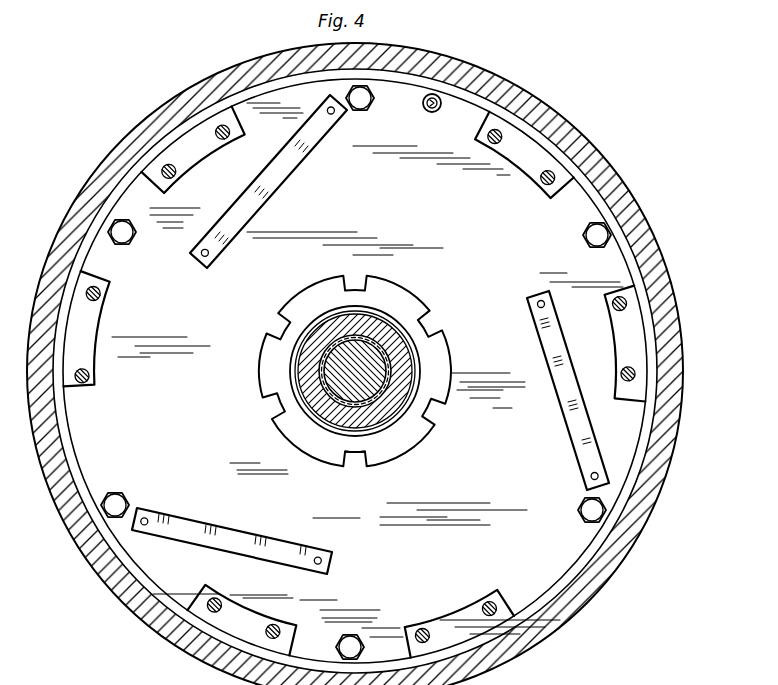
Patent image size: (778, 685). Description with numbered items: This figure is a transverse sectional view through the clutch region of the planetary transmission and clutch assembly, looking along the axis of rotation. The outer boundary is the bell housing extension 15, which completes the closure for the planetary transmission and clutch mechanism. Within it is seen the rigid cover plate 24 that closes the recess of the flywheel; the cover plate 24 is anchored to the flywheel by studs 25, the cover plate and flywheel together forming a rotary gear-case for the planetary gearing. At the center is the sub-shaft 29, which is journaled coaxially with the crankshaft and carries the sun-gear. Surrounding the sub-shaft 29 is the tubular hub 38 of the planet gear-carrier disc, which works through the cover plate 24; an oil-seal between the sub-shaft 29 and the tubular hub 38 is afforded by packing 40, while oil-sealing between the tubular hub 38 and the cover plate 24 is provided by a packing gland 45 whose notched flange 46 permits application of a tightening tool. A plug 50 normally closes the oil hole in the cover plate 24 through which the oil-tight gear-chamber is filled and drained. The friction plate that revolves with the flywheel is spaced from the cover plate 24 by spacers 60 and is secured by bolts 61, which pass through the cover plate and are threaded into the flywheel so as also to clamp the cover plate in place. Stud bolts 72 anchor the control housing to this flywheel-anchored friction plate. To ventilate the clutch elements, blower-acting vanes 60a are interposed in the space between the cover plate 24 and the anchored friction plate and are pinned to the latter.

The bell housing extension 15 is at (606, 170).
The cover plate 24 is at (628, 457).
The studs 25 is at (142, 212).
The sub-shaft 29 is at (380, 370).
The tubular hub 38 is at (320, 402).
The packing 40 is at (325, 366).
The packing gland 45 is at (333, 460).
The notched flange 46 is at (291, 325).
The plug 50 is at (428, 108).
The spacers 60 is at (188, 139).
The blower-acting vanes 60a is at (273, 182).
The bolts 61 is at (224, 140).
The stud bolts 72 is at (169, 178).